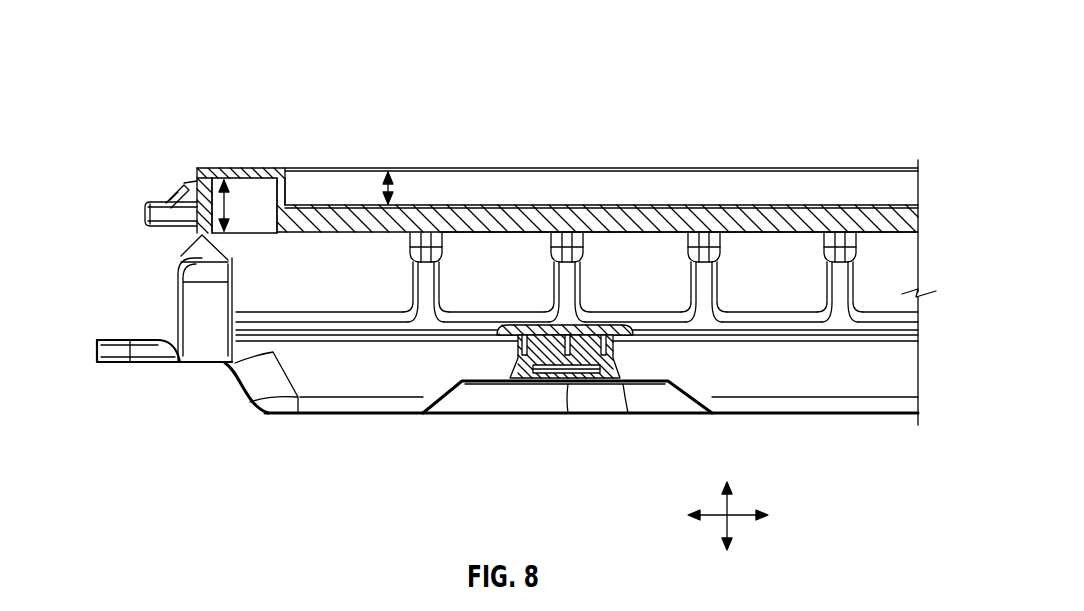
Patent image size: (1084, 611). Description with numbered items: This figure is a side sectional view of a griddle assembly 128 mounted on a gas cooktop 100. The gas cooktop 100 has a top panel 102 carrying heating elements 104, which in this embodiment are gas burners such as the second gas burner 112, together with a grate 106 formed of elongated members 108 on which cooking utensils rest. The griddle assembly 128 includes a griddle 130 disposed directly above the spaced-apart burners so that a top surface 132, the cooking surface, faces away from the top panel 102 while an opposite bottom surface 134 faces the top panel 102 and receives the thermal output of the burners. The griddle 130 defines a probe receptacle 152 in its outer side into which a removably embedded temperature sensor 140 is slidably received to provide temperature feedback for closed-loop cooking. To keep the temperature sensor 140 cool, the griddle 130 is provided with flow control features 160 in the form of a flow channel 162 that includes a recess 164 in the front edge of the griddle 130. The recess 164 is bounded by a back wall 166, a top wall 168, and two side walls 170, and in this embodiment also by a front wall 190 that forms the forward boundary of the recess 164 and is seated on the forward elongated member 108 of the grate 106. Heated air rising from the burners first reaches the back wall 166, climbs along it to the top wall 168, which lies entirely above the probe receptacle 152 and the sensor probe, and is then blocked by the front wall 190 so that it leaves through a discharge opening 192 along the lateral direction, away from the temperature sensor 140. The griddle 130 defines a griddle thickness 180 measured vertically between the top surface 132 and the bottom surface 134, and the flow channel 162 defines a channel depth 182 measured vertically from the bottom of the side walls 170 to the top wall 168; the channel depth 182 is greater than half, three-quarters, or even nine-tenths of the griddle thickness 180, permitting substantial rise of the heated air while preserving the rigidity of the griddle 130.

The gas cooktop 100 is at (810, 85).
The top panel 102 is at (900, 415).
The heating elements 104 is at (553, 383).
The grate 106 is at (412, 292).
The elongated member 108 is at (207, 318).
The second gas burner 112 is at (605, 380).
The griddle assembly 128 is at (603, 128).
The griddle 130 is at (855, 207).
The top surface 132 is at (507, 166).
The bottom surface 134 is at (528, 236).
The temperature sensor 140 is at (135, 202).
The probe receptacle 152 is at (197, 172).
The flow control features 160 is at (280, 152).
The flow channel 162 is at (246, 220).
The recess 164 is at (262, 223).
The back wall 166 is at (287, 193).
The top wall 168 is at (225, 180).
The side walls 170 is at (247, 193).
The griddle thickness 180 is at (400, 192).
The channel depth 182 is at (200, 218).
The front wall 190 is at (178, 190).
The discharge opening 192 is at (280, 205).